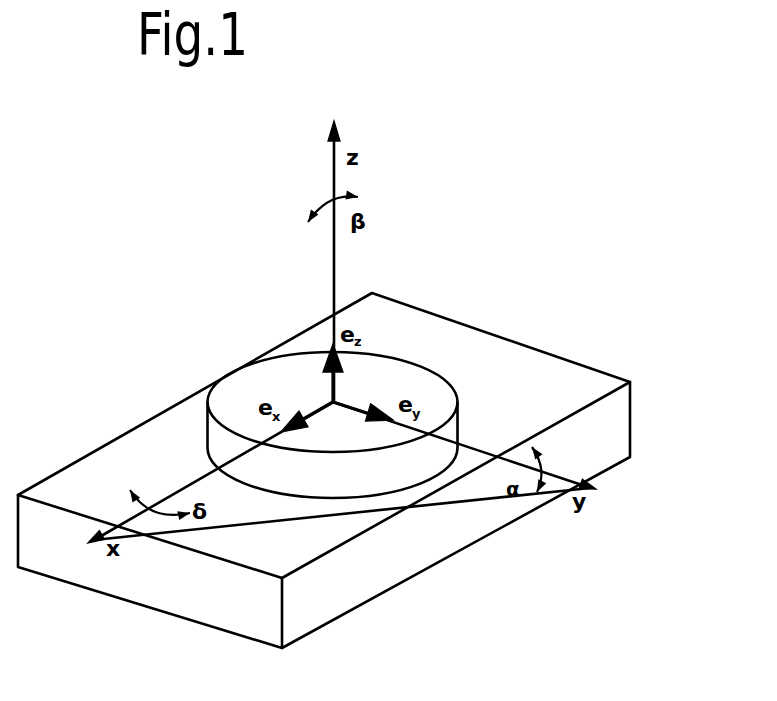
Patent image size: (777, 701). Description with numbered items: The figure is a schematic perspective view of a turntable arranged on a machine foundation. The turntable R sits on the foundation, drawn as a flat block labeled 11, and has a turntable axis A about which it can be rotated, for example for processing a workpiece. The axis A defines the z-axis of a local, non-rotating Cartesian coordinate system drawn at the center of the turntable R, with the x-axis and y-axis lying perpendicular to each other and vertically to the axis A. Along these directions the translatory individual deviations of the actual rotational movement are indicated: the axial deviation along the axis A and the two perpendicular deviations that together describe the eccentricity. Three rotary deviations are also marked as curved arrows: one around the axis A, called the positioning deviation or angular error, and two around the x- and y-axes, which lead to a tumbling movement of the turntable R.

The base body / carrier plate 11 is at (612, 435).
The turntable axis A is at (335, 263).
The turntable R is at (430, 392).